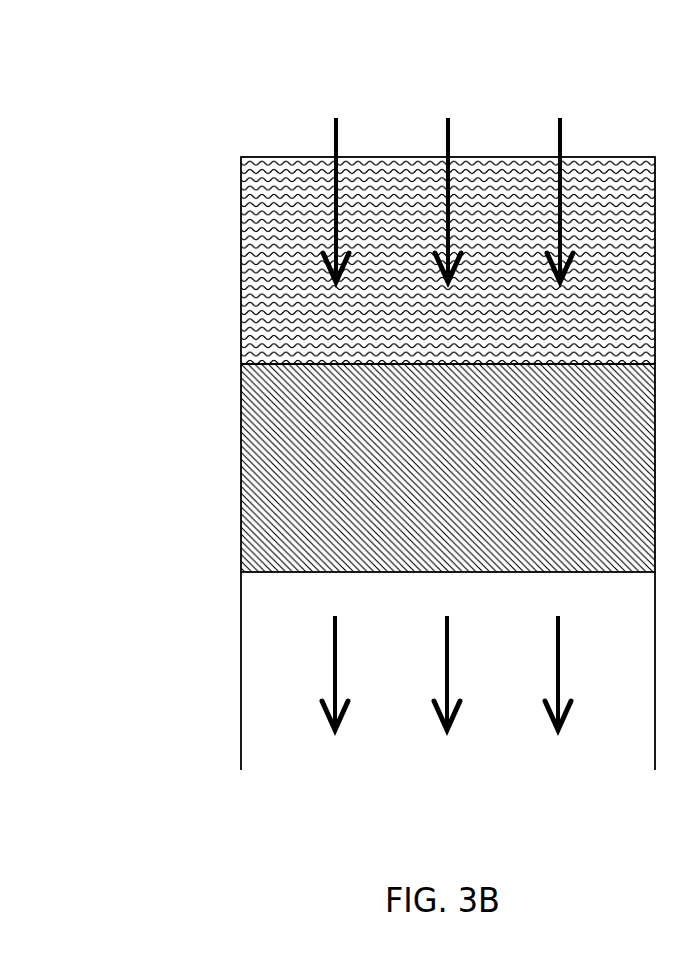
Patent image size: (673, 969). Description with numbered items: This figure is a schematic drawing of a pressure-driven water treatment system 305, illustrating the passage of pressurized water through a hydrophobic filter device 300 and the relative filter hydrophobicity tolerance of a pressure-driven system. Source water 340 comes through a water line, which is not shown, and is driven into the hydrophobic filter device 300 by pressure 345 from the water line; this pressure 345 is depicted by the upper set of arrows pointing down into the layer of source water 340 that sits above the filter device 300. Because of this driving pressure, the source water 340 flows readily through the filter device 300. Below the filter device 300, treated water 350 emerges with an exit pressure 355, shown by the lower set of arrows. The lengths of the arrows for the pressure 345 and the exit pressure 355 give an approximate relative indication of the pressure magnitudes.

The pressure-driven water treatment system 305 is at (196, 253).
The source water 340 is at (368, 300).
The hydrophobic filter device 300 is at (368, 469).
The pressure 345 is at (307, 113).
The treated water 350 is at (418, 637).
The exit pressure 355 is at (583, 735).